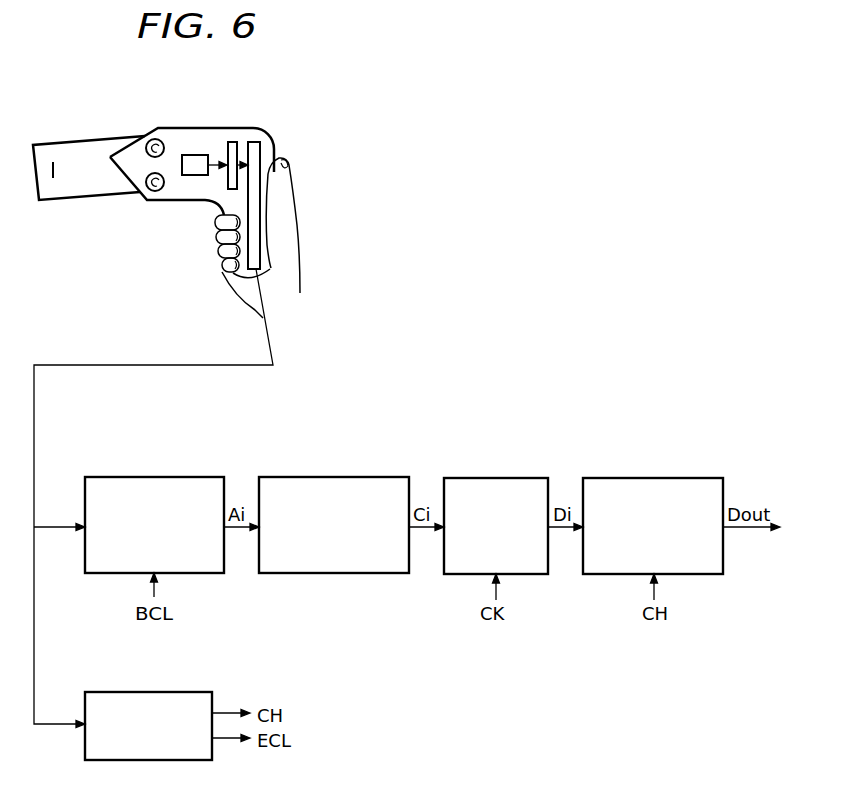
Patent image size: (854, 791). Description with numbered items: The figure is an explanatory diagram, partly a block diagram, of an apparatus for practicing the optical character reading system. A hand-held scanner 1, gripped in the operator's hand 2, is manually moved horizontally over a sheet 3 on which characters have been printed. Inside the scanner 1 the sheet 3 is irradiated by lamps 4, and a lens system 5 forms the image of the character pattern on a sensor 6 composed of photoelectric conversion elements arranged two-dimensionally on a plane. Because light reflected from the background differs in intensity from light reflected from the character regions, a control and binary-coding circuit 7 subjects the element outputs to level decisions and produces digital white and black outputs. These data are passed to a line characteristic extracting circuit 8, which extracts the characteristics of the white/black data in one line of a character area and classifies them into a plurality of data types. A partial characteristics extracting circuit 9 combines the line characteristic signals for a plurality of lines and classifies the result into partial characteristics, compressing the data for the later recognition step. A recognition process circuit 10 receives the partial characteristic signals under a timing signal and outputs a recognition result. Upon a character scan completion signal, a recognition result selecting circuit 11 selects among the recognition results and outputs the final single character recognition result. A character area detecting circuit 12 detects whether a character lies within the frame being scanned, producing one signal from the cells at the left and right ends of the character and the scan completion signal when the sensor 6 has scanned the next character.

The scanner 1 is at (240, 128).
The hand of operator 2 is at (293, 225).
The sheet 3 is at (77, 141).
The lamps 4 is at (163, 142).
The lens system 5 is at (190, 177).
The sensor 6 is at (233, 142).
The control and binary-coding circuit 7 is at (277, 152).
The line characteristic extracting circuit 8 is at (157, 477).
The partial characteristics extracting circuit 9 is at (340, 477).
The recognition process circuit 10 is at (493, 478).
The recognition result selecting circuit 11 is at (652, 478).
The character area detecting circuit 12 is at (145, 692).